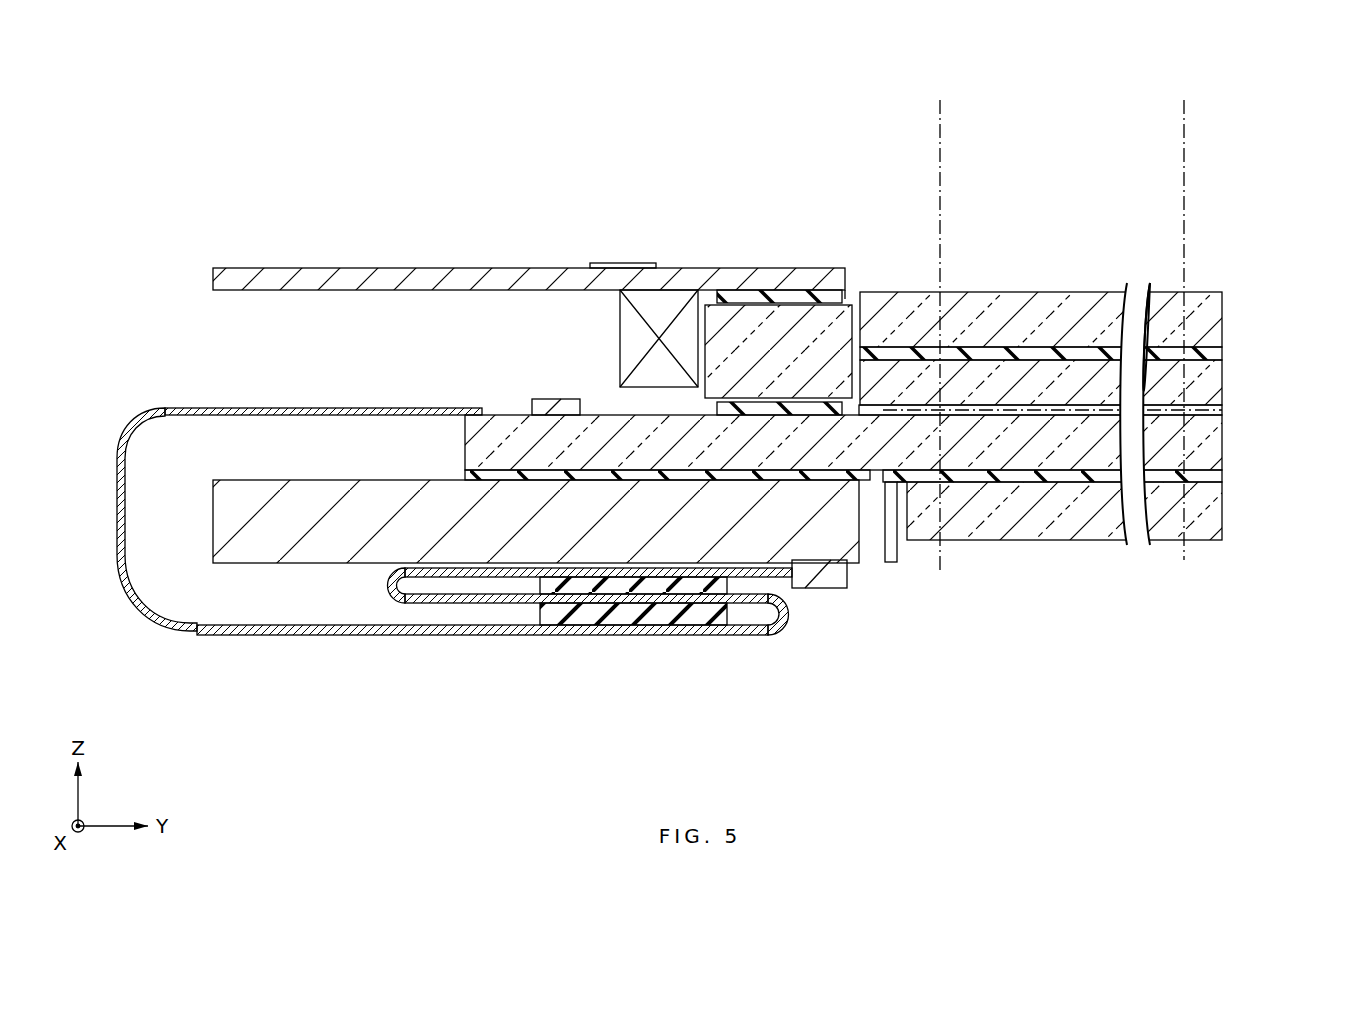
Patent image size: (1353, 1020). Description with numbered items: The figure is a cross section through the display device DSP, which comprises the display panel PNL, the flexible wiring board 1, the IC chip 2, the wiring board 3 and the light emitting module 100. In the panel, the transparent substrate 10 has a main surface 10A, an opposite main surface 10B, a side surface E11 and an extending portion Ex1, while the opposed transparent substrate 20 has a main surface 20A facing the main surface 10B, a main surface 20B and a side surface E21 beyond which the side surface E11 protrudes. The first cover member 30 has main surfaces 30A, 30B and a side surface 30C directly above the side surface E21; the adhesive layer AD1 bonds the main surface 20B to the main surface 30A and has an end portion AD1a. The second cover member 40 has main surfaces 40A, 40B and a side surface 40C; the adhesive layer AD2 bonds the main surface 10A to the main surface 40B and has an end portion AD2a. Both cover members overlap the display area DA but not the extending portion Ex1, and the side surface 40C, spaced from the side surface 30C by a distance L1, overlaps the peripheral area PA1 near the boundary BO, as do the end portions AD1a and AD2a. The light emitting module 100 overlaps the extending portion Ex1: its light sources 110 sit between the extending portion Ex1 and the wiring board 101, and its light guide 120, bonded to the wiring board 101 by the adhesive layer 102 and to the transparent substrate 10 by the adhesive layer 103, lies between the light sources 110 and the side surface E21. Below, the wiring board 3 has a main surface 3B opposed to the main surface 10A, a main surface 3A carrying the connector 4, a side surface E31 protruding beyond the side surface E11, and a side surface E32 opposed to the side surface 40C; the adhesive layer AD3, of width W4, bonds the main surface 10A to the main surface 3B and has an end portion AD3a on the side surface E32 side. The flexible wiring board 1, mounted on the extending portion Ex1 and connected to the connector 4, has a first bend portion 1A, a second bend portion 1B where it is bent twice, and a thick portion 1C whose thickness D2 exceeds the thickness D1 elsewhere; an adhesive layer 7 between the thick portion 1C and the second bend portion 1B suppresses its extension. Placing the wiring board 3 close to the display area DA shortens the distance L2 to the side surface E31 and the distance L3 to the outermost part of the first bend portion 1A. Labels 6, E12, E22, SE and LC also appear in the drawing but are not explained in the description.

The flexible wiring board 1 is at (424, 554).
The first bend portion 1A is at (106, 407).
The second bend portion 1B is at (389, 566).
The thick portion 1C is at (197, 640).
The IC chip 2 is at (548, 399).
The wiring board 3 is at (297, 495).
The main surface 3A is at (338, 566).
The main surface 3B is at (328, 478).
The connector 4 is at (820, 588).
The component on wiring substrate 6 is at (622, 263).
The adhesive layer 7 is at (540, 612).
The transparent substrate 10 is at (1218, 458).
The main surface 10A is at (1108, 478).
The main surface 10B is at (1098, 412).
The transparent substrate 20 is at (1220, 382).
The main surface 20A is at (1173, 418).
The main surface 20B is at (982, 357).
The first cover member 30 is at (1220, 318).
The main surface 30A is at (1064, 349).
The main surface 30B is at (1046, 289).
The side surface 30C is at (855, 297).
The second cover member 40 is at (1050, 579).
The main surface 40A is at (1050, 547).
The main surface 40B is at (1020, 473).
The side surface 40C is at (884, 518).
The light emitting module 100 is at (532, 305).
The wiring board 101 is at (447, 270).
The adhesive layer 102 is at (716, 297).
The adhesive layer 103 is at (716, 408).
The light sources 110 is at (622, 330).
The light guide 120 is at (720, 358).
The adhesive layer AD1 is at (1222, 352).
The end portion AD1a is at (884, 344).
The adhesive layer AD2 is at (1222, 478).
The end portion AD2a is at (925, 497).
The adhesive layer AD3 is at (612, 480).
The end portion AD3a is at (867, 488).
The side surface E11 is at (464, 440).
The second edge of first substrate E12 is at (1226, 433).
The side surface E21 is at (848, 378).
The second edge of second substrate E22 is at (1226, 365).
The side surface E31 is at (213, 515).
The side surface E32 is at (903, 548).
The sealant SE is at (883, 417).
The liquid crystal layer LC is at (978, 416).
The display panel PNL is at (1282, 322).
The display device DSP is at (1212, 210).
The display area DA is at (1138, 115).
The peripheral area PA1 is at (940, 109).
The boundary BO is at (940, 100).
The extending portion Ex1 is at (511, 395).
The thickness D1 is at (243, 437).
The thickness D2 is at (243, 660).
The distance L1 is at (859, 480).
The distance L2 is at (213, 480).
The distance L3 is at (117, 480).
The width W4 is at (472, 480).